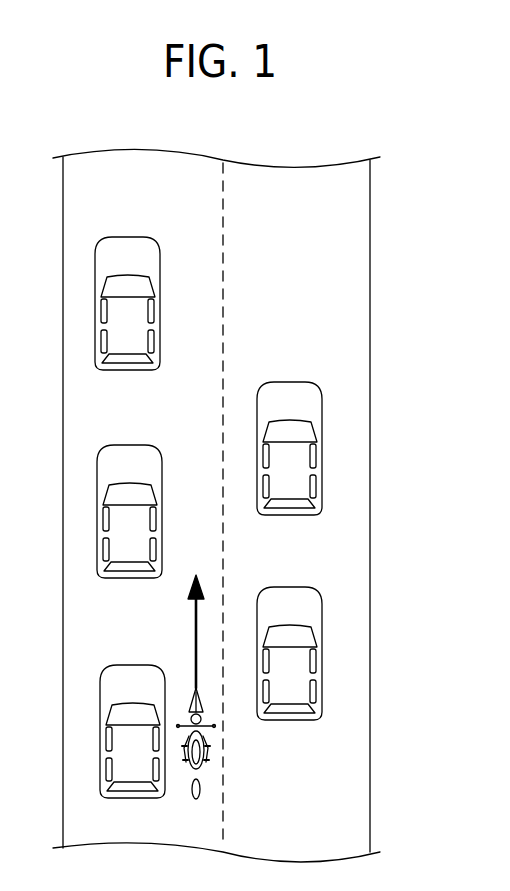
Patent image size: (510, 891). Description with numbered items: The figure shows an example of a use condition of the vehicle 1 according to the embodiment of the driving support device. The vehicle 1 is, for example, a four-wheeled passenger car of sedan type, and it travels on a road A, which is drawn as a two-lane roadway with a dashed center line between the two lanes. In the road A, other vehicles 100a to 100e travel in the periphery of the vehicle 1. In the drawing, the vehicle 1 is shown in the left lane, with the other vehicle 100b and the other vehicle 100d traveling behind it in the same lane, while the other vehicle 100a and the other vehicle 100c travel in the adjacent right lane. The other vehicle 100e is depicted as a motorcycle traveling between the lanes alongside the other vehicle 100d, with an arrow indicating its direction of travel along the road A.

The vehicle 1 is at (122, 237).
The other vehicle 100a is at (270, 382).
The other vehicle 100b is at (109, 445).
The other vehicle 100c is at (268, 587).
The other vehicle 100d is at (114, 665).
The other vehicle 100e is at (212, 746).
The road A is at (370, 222).